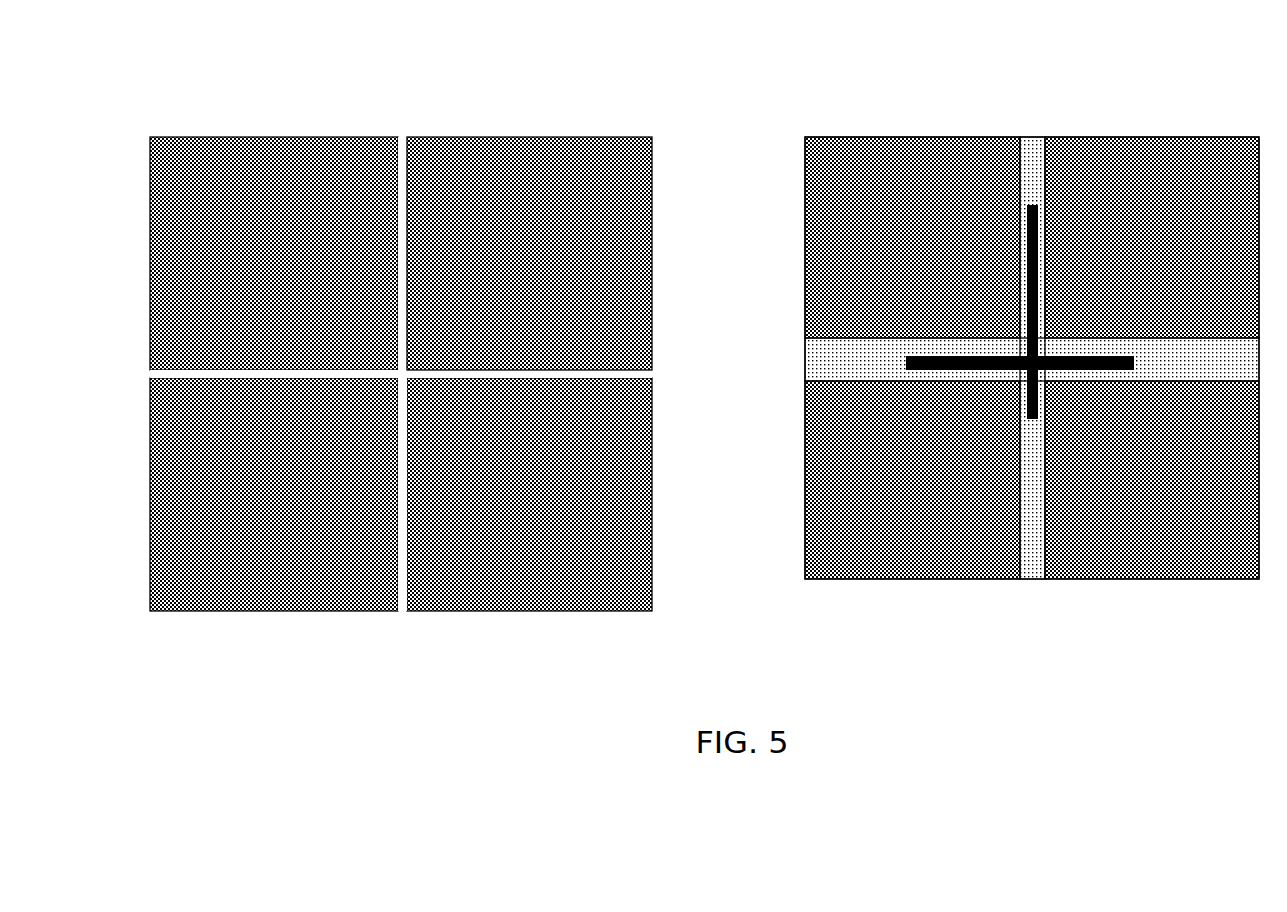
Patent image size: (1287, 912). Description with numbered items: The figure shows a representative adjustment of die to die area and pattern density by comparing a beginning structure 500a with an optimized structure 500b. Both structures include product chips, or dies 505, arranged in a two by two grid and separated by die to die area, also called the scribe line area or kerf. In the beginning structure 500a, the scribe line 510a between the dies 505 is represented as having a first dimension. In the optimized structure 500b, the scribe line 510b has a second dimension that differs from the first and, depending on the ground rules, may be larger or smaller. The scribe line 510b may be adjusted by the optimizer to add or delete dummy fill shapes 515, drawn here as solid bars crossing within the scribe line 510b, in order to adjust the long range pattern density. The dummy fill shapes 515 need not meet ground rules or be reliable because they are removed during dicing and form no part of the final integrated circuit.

The beginning structure 500a is at (401, 372).
The optimized structure 500b is at (1032, 355).
The product chips (dies) 505 is at (819, 225).
The scribe line 510a is at (418, 131).
The scribe line 510b is at (1044, 136).
The dummy fill shapes 515 is at (982, 337).